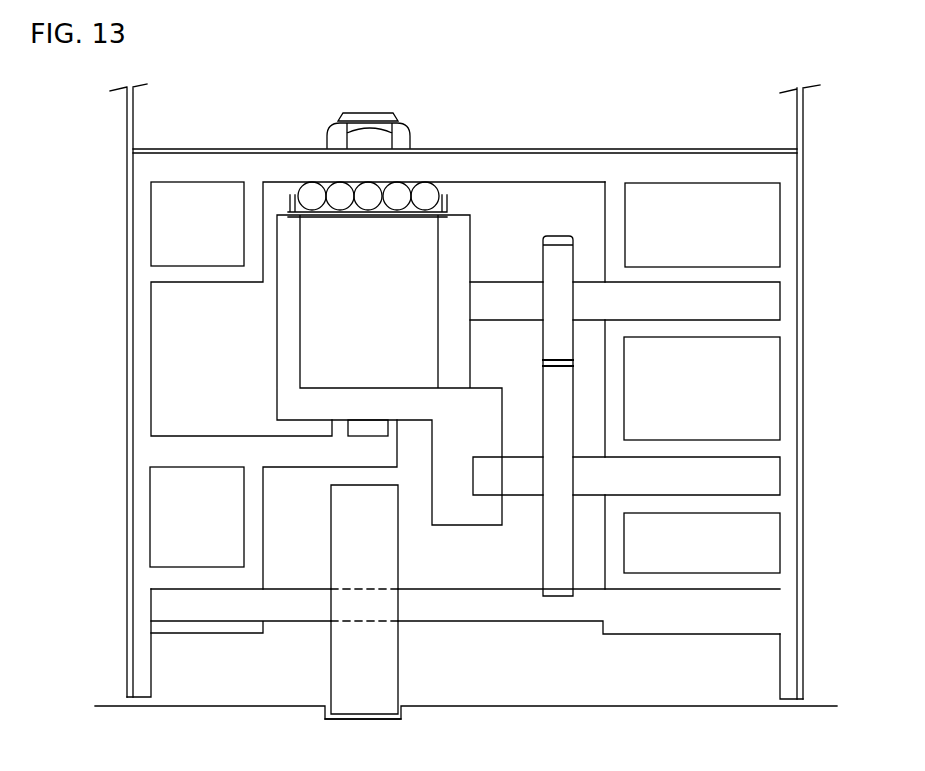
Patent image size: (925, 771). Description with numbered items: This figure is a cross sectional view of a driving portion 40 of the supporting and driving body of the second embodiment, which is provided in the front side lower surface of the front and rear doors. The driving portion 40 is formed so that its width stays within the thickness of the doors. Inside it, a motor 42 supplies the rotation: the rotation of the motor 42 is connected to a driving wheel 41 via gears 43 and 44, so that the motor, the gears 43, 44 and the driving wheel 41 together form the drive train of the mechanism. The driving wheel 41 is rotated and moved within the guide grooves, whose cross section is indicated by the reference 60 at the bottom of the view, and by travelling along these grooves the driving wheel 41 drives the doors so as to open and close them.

The driving portion 40 is at (771, 165).
The driving wheel 41 is at (382, 672).
The motor 42 is at (413, 235).
The gear 43 is at (562, 266).
The gear 44 is at (555, 375).
The cross section of guide grooves 60 is at (335, 719).